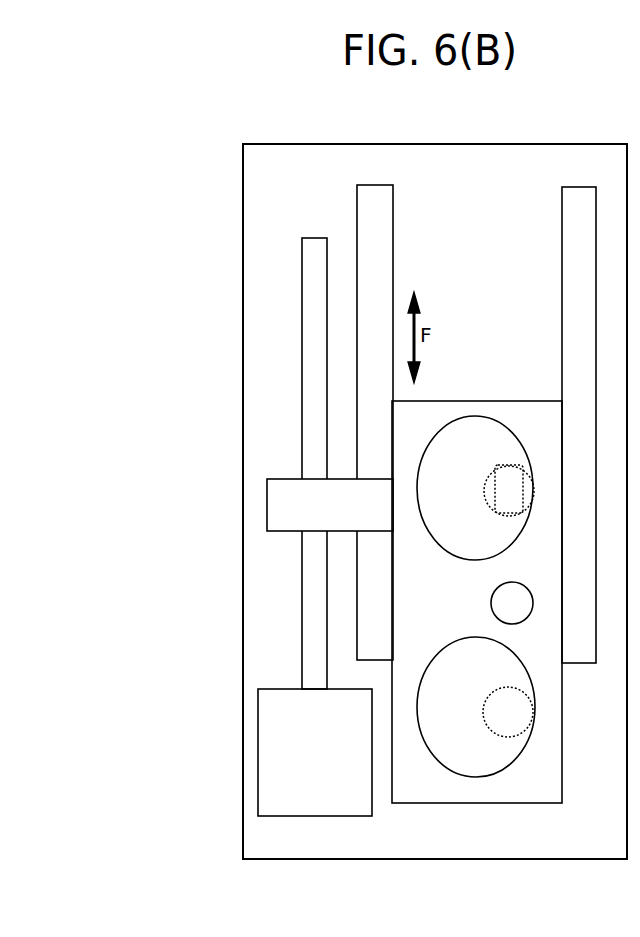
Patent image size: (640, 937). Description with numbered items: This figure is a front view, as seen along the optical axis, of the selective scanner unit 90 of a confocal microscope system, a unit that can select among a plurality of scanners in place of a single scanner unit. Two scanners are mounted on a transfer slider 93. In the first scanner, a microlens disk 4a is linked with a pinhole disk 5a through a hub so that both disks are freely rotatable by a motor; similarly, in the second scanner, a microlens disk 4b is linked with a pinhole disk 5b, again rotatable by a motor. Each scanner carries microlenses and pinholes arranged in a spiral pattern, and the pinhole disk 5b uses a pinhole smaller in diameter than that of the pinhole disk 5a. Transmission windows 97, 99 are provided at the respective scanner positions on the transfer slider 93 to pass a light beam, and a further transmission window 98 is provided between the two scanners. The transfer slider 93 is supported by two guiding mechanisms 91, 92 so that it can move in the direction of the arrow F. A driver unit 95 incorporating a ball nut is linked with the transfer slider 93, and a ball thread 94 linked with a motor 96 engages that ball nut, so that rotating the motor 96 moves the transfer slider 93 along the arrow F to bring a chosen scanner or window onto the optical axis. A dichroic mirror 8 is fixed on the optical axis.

The selective scanner unit 90 is at (570, 132).
The guiding mechanism 91 is at (597, 212).
The guiding mechanism 92 is at (375, 185).
The transfer slider 93 is at (423, 402).
The ball thread 94 is at (302, 325).
The driver unit 95 is at (267, 500).
The motor 96 is at (257, 718).
The microlens disk 4a is at (475, 441).
The pinhole disk 5a is at (485, 418).
The microlens disk 4b is at (476, 740).
The pinhole disk 5b is at (455, 772).
The dichroic mirror 8 is at (530, 465).
The transmission window 97 is at (532, 508).
The transmission window 98 is at (532, 607).
The transmission window 99 is at (518, 737).